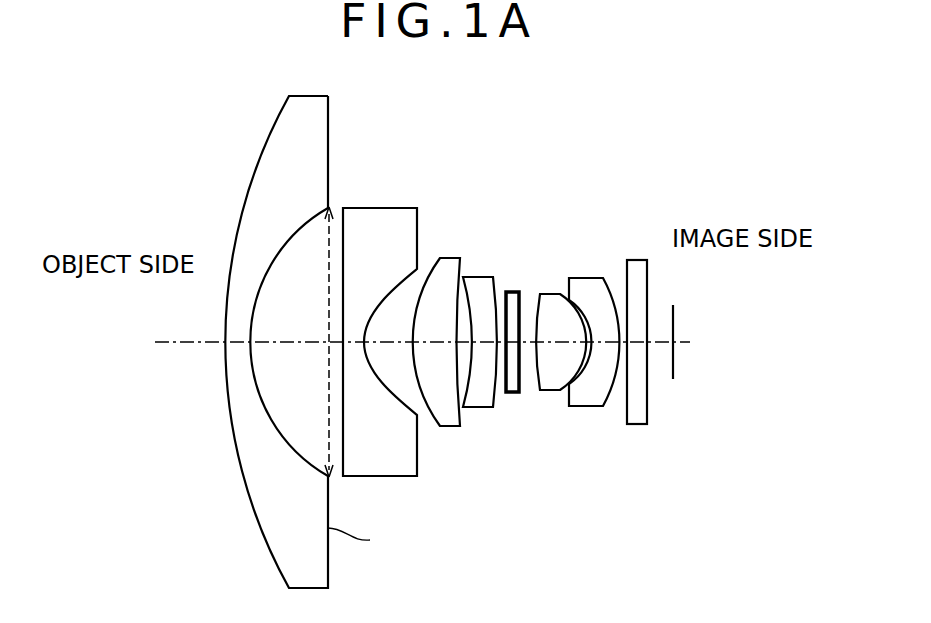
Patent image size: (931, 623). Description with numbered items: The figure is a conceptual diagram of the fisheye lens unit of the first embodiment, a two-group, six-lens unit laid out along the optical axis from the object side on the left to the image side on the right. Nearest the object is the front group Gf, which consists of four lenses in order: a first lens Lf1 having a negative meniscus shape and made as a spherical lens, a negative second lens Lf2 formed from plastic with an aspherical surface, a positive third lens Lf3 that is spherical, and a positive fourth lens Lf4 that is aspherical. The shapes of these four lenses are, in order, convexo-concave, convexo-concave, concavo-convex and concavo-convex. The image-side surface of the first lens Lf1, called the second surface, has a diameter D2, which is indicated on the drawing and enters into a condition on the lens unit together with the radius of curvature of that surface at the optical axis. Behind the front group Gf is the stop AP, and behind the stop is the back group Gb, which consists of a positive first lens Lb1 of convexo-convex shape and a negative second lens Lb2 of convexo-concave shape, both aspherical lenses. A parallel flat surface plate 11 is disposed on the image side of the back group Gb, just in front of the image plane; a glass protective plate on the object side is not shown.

The front group Gf is at (529, 213).
The first lens Lf1 is at (265, 146).
The second lens Lf2 is at (378, 208).
The third lens Lf3 is at (450, 258).
The fourth lens Lf4 is at (480, 277).
The diameter of the second surface D2 is at (314, 342).
The stop AP is at (511, 395).
The back group Gb is at (615, 475).
The first lens Lb1 is at (550, 392).
The second lens Lb2 is at (585, 408).
The parallel flat surface plate 11 is at (635, 260).